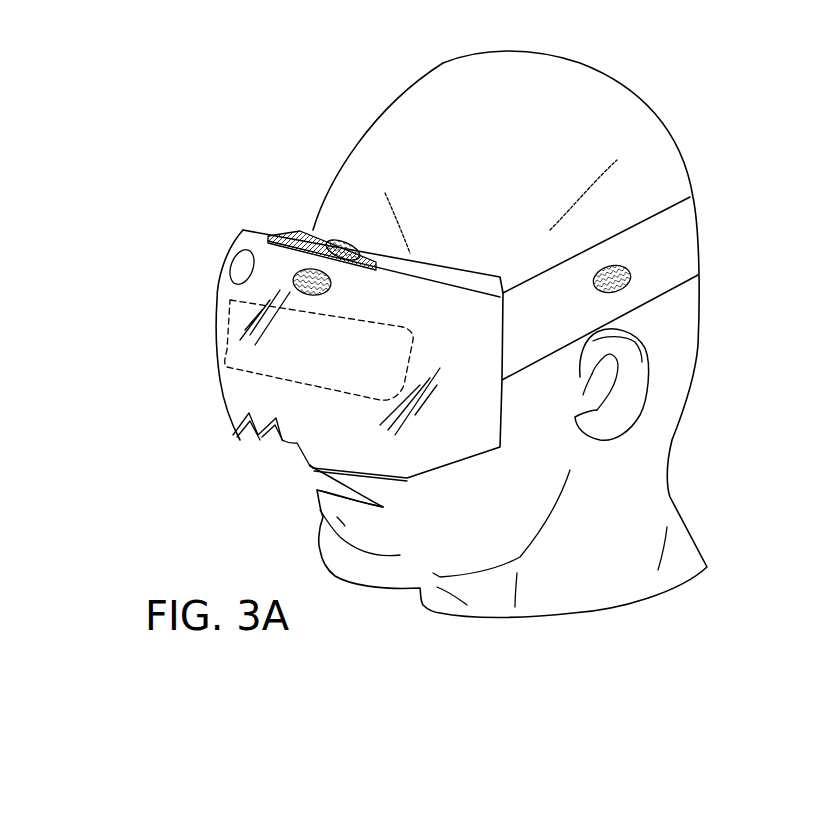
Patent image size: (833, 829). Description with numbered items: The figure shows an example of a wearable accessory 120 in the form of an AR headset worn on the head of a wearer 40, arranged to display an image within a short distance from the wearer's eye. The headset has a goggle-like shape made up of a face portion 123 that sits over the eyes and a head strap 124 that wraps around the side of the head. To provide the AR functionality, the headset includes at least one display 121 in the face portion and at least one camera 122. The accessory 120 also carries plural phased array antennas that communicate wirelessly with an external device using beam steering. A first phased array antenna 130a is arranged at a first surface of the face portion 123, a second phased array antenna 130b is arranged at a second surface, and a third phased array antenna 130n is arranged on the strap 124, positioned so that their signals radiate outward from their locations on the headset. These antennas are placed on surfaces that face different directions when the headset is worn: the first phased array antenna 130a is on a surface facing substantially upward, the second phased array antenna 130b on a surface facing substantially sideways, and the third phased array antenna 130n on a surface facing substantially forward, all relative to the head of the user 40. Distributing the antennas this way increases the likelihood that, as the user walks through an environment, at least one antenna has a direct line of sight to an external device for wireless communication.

The wearer 40 is at (353, 137).
The wearable accessory 120 is at (157, 135).
The display 121 is at (233, 367).
The camera 122 is at (230, 263).
The face portion 123 is at (243, 230).
The head strap 124 is at (675, 247).
The first phased array antenna 130a is at (330, 243).
The second phased array antenna 130b is at (632, 282).
The third phased array antenna 130n is at (290, 280).